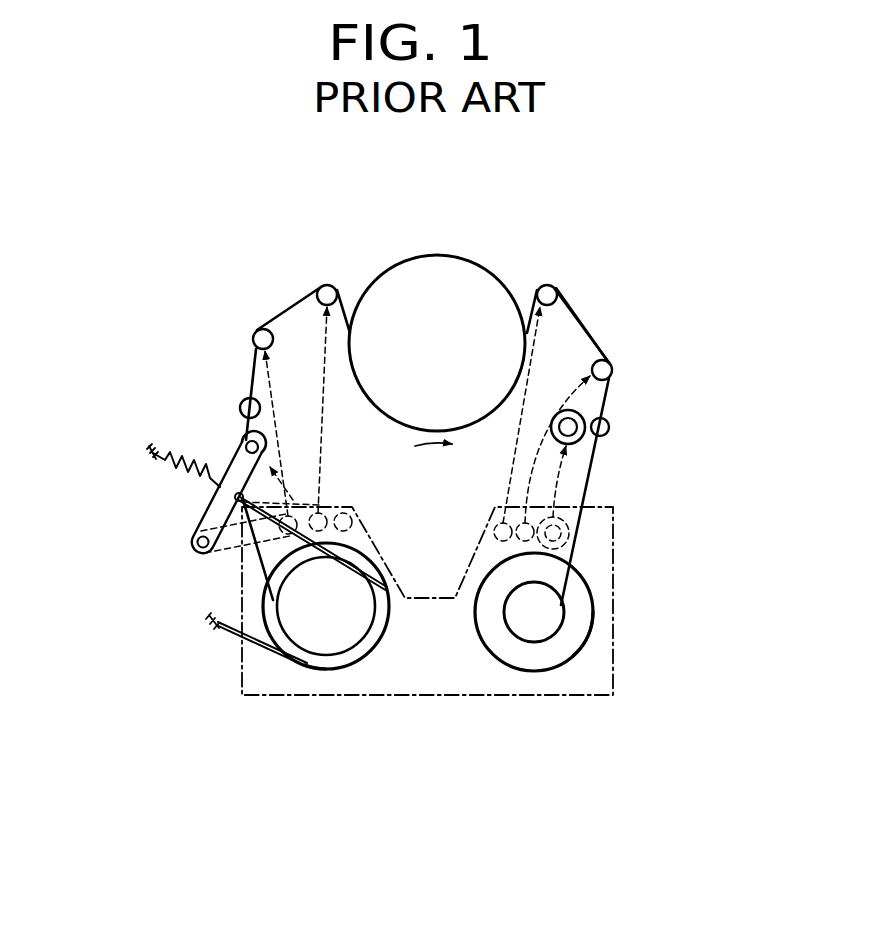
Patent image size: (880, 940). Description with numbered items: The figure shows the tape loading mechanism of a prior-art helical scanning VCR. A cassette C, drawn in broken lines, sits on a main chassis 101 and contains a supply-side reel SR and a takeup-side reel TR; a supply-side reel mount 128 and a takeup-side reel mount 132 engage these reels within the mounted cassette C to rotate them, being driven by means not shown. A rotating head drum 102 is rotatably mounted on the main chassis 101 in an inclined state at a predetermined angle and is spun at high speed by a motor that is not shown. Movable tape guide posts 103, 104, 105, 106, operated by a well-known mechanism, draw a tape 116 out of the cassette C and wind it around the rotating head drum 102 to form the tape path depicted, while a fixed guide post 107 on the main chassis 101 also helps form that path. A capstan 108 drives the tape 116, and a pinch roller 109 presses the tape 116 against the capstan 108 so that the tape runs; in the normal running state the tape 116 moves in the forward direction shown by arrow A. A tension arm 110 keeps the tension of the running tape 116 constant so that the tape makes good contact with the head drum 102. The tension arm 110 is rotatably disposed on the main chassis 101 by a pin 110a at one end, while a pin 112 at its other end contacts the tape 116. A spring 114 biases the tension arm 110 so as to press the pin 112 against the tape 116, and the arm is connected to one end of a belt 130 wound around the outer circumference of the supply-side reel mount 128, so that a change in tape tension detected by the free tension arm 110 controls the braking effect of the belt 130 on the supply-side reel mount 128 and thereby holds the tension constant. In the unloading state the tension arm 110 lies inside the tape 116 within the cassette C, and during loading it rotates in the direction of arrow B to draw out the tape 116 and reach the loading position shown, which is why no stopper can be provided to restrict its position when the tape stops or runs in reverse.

The main chassis 101 is at (774, 465).
The rotating head drum 102 is at (448, 264).
The movable tape guide post 103 is at (326, 284).
The movable tape guide post 104 is at (547, 284).
The movable tape guide post 105 is at (257, 331).
The movable tape guide post 106 is at (609, 361).
The fixed guide post 107 is at (243, 402).
The capstan 108 is at (609, 425).
The pinch roller 109 is at (575, 410).
The tension arm 110 is at (197, 513).
The pin 110a is at (197, 552).
The pin 112 is at (245, 447).
The spring 114 is at (172, 472).
The tape 116 is at (578, 313).
The supply-side reel mount 128 is at (310, 658).
The belt 130 is at (260, 650).
The takeup-side reel mount 132 is at (575, 633).
The supply-side reel SR is at (340, 632).
The takeup-side reel TR is at (538, 630).
The arrow A is at (433, 463).
The arrow B is at (287, 481).
The cassette C is at (615, 593).